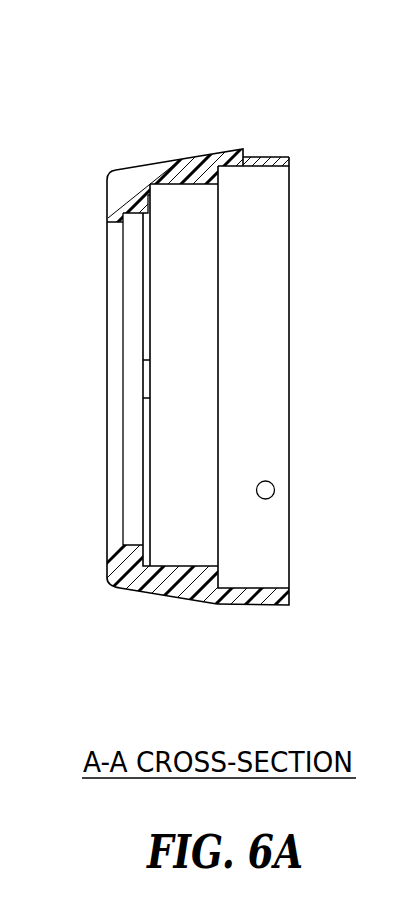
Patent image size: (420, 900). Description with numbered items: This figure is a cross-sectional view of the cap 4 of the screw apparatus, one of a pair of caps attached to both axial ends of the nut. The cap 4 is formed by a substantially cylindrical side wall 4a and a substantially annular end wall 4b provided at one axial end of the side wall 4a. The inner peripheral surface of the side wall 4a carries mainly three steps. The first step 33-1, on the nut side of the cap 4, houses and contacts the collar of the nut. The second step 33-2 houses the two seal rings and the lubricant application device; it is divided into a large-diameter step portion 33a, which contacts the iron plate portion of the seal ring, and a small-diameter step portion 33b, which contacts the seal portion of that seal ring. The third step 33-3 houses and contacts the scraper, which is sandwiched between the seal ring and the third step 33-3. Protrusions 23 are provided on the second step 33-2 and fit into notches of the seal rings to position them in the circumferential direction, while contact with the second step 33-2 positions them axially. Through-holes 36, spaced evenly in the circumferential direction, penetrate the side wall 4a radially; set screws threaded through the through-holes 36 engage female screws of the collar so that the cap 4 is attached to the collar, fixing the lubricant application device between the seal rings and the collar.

The second step 33-2 is at (257, 62).
The large-diameter step portion 33a is at (166, 172).
The small-diameter step portion 33b is at (200, 165).
The third step 33-3 is at (121, 215).
The first step 33-1 is at (243, 152).
The through-hole 36 is at (268, 168).
The protrusion 23 is at (152, 379).
The cap 4 is at (198, 652).
The side wall 4a is at (197, 589).
The end wall 4b is at (110, 550).